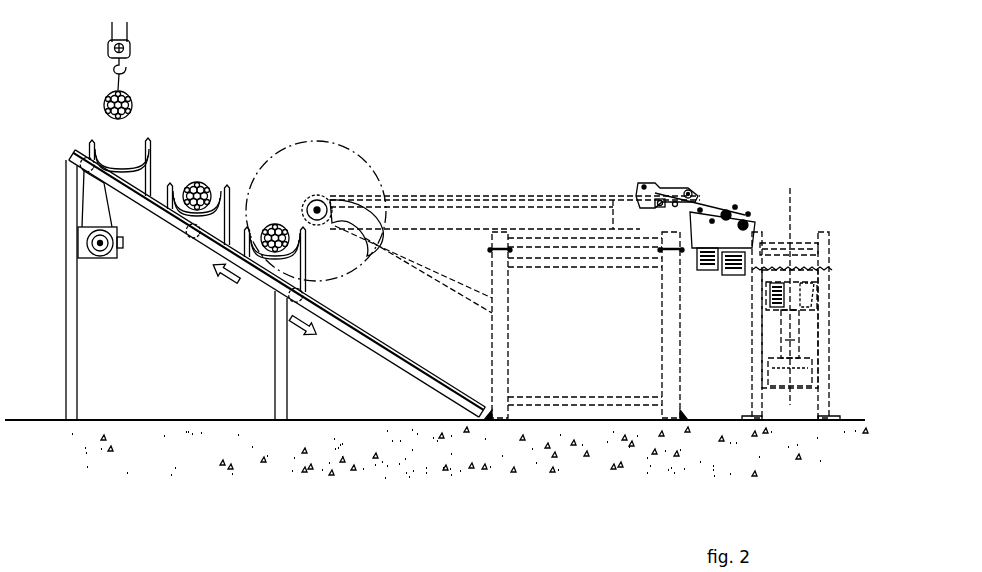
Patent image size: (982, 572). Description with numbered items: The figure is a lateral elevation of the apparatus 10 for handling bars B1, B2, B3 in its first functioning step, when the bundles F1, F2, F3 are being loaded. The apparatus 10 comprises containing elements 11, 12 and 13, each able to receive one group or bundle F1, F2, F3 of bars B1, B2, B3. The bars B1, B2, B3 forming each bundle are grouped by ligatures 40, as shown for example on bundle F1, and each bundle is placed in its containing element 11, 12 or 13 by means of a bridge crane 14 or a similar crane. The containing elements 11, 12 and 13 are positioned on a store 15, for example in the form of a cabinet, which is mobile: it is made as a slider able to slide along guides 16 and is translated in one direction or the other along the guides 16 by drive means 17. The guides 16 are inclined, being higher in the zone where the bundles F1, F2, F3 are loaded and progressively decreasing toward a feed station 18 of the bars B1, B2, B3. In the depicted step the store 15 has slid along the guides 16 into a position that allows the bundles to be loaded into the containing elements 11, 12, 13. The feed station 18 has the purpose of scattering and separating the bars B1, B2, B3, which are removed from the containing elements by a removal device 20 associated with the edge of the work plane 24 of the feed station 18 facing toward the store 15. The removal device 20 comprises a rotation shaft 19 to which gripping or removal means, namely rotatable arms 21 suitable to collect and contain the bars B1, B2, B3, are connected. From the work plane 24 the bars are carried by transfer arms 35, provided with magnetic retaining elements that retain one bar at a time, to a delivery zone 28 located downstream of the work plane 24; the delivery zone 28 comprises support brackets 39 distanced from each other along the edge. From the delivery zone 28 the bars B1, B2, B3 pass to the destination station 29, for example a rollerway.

The apparatus for handling bars 10 is at (609, 250).
The containing element 11 is at (260, 295).
The containing element 12 is at (229, 191).
The containing element 13 is at (304, 264).
The bridge crane 14 is at (122, 57).
The store 15 is at (161, 206).
The guides 16 is at (268, 281).
The drive means 17 is at (102, 247).
The feed station 18 is at (507, 194).
The rotation shaft 19 is at (323, 197).
The removal device 20 is at (344, 197).
The rotatable arms 21 is at (359, 214).
The work plane 24 is at (560, 191).
The delivery zone 28 is at (722, 207).
The destination station 29 is at (835, 283).
The transfer arms 35 is at (646, 186).
The support brackets 39 is at (712, 223).
The ligatures 40 is at (177, 182).
The bundle of bars F1 is at (111, 93).
The bundle of bars F2 is at (200, 229).
The bundle of bars F3 is at (290, 155).
The bars B1 is at (126, 113).
The bars B2 is at (190, 200).
The bars B3 is at (284, 241).